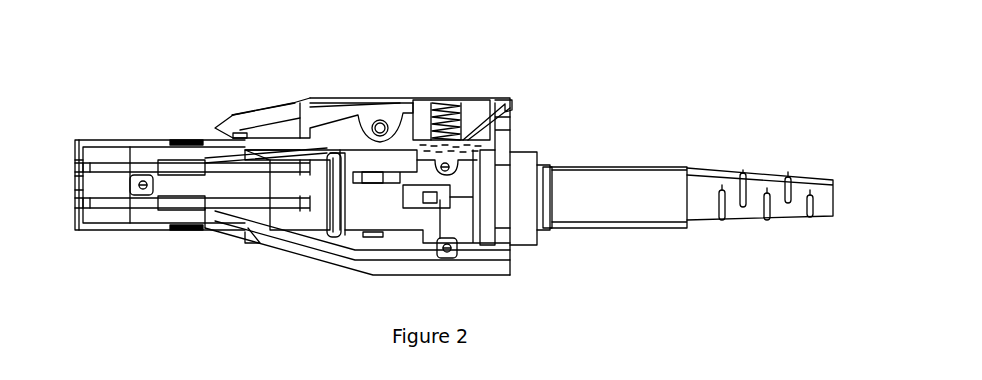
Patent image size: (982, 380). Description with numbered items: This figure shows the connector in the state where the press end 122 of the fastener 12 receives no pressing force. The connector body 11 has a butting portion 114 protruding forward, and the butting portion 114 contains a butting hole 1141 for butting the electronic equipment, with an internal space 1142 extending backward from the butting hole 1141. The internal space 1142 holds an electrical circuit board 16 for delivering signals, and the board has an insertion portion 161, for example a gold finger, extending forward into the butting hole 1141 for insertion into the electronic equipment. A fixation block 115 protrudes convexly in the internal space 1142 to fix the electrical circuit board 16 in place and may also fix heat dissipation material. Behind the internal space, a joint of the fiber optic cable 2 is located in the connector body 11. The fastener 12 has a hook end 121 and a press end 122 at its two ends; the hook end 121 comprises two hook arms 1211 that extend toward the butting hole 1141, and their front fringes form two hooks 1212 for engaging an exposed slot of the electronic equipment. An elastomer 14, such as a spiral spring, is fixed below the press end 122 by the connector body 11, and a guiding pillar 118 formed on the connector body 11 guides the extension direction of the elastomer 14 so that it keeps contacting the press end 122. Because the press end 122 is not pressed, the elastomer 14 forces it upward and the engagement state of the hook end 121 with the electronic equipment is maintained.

The fiber optic cable 2 is at (592, 178).
The connector body 11 is at (510, 130).
The fastener 12 is at (346, 88).
The elastomer 14 is at (452, 103).
The electrical circuit board 16 is at (267, 200).
The butting portion 114 is at (113, 140).
The fixation block 115 is at (313, 190).
The guiding pillar 118 is at (434, 138).
The hook end 121 is at (258, 87).
The press end 122 is at (492, 105).
The insertion portion 161 is at (88, 201).
The butting hole 1141 is at (82, 185).
The internal space 1142 is at (290, 215).
The hook arms 1211 is at (277, 112).
The hooks 1212 is at (220, 127).